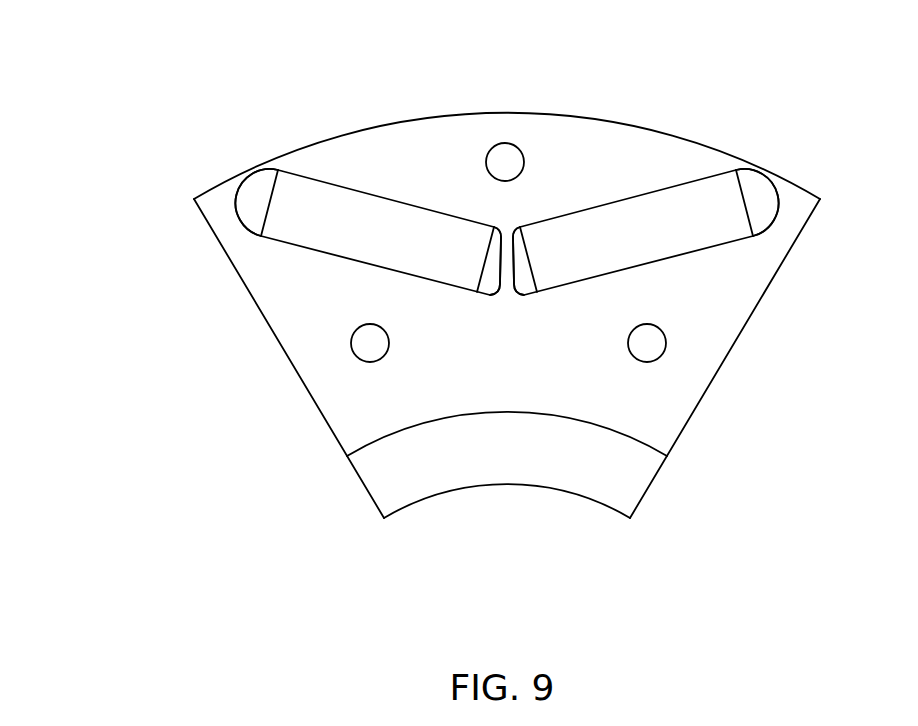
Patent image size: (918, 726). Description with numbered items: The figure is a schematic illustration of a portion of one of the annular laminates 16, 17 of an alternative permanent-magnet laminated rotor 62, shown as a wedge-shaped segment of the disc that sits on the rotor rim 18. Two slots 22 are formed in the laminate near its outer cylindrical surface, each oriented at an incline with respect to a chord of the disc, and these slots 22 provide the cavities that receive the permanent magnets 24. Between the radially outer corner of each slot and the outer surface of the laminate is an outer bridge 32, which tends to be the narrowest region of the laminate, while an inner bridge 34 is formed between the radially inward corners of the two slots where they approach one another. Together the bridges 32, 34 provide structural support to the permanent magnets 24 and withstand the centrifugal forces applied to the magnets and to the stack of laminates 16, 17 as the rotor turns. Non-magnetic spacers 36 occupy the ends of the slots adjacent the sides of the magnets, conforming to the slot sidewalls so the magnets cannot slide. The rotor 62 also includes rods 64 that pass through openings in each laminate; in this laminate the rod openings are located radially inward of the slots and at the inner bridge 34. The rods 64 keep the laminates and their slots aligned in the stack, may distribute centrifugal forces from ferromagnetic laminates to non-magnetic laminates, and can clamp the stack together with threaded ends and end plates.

The annular laminate 16 is at (525, 110).
The annular laminate 17 is at (525, 110).
The rotor rim 18 is at (423, 463).
The slot 22 is at (637, 193).
The permanent magnet 24 is at (682, 217).
The outer bridge 32 is at (405, 130).
The inner bridge 34 is at (508, 227).
The non-magnetic spacer 36 is at (257, 198).
The PM laminated rotor 62 is at (168, 259).
The rod 64 is at (503, 160).